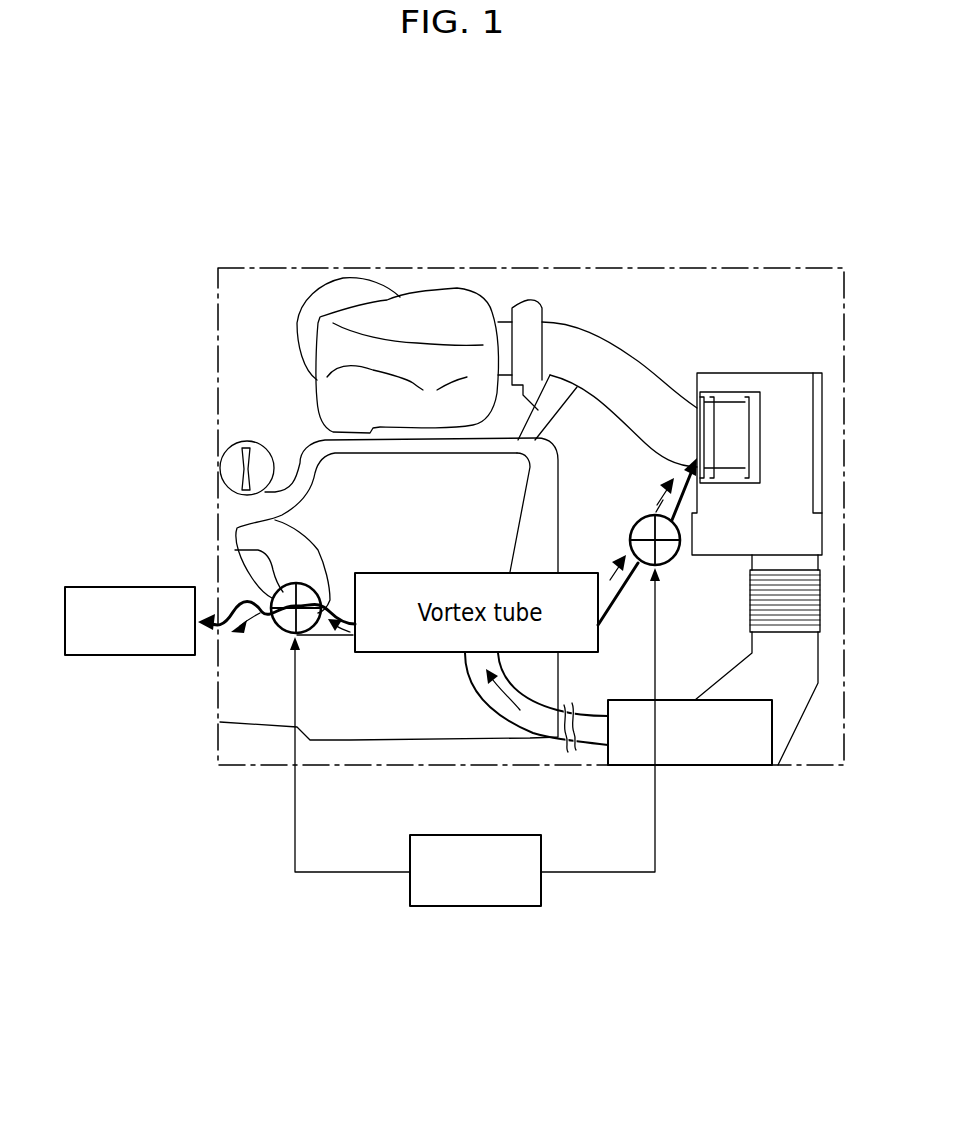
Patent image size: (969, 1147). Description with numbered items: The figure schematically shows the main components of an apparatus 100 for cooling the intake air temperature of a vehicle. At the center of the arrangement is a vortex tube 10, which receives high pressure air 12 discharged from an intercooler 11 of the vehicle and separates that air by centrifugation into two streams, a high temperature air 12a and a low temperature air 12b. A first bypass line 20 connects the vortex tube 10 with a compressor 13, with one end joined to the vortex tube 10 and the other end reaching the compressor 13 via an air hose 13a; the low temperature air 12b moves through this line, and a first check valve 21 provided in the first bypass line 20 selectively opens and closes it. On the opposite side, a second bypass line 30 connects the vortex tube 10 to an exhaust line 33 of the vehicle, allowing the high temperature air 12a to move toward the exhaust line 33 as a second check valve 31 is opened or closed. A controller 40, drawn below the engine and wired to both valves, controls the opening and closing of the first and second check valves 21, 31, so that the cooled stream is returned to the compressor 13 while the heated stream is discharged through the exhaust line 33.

The apparatus for cooling intake air temperature 100 is at (284, 253).
The compressor 13 is at (467, 290).
The air hose 13a is at (613, 340).
The vortex tube 10 is at (405, 653).
The second bypass line 30 is at (275, 520).
The second check valve 31 is at (235, 550).
The exhaust line 33 is at (127, 586).
The high temperature air 12a is at (255, 630).
The high pressure air 12 is at (496, 715).
The low temperature air 12b is at (662, 493).
The intercooler 11 is at (743, 766).
The first bypass line 20 is at (622, 588).
The first check valve 21 is at (672, 557).
The controller 40 is at (507, 907).